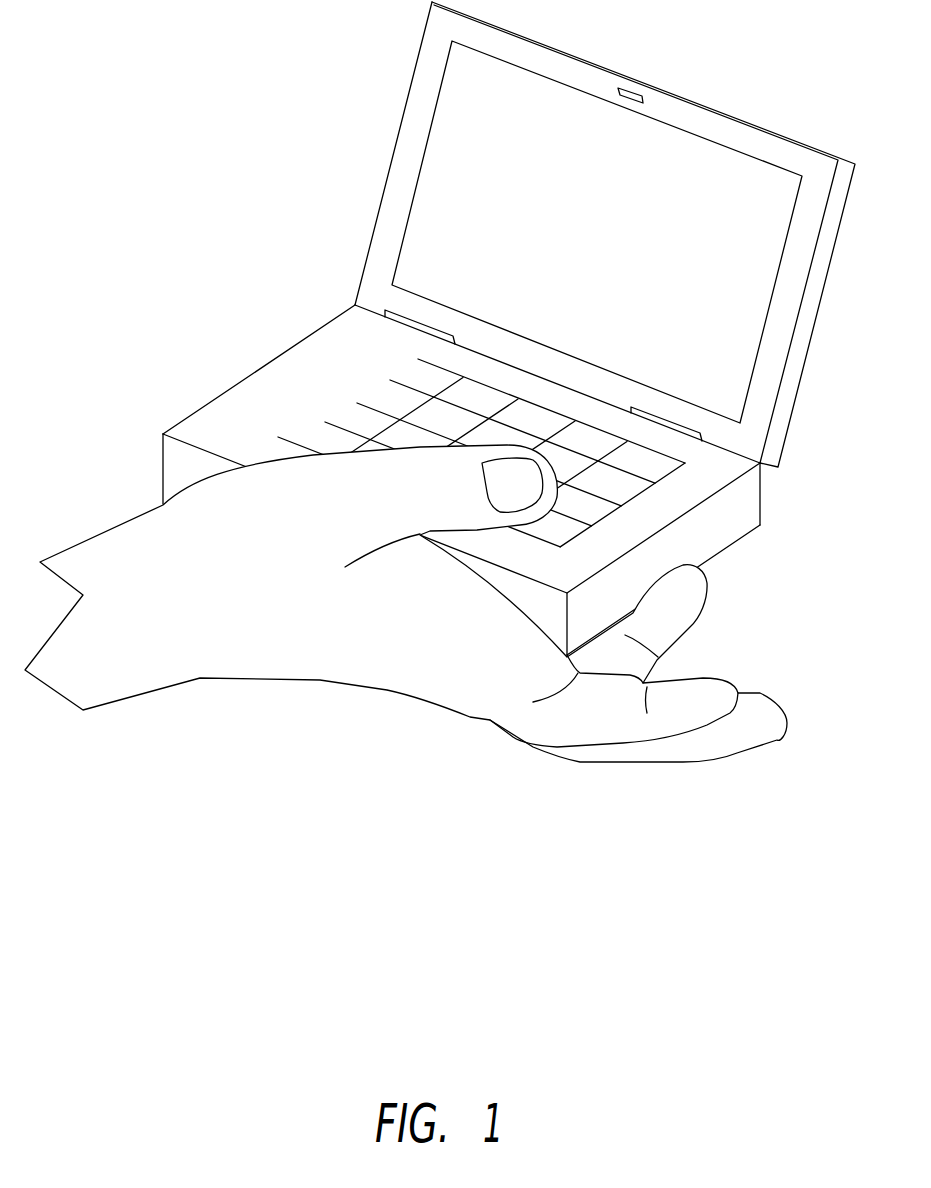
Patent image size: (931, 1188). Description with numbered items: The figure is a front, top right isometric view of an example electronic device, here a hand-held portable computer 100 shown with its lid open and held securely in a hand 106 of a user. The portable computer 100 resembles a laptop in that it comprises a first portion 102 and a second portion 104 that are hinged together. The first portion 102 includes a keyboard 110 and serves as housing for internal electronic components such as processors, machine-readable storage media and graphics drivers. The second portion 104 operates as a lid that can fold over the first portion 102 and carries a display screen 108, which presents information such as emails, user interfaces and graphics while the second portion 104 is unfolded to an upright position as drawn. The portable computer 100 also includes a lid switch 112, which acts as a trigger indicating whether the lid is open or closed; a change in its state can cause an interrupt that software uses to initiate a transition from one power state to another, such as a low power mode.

The portable computer 100 is at (480, 328).
The first portion 102 is at (352, 397).
The second portion 104 is at (556, 202).
The hand 106 is at (322, 646).
The display screen 108 is at (614, 234).
The keyboard 110 is at (685, 465).
The lid switch 112 is at (633, 97).